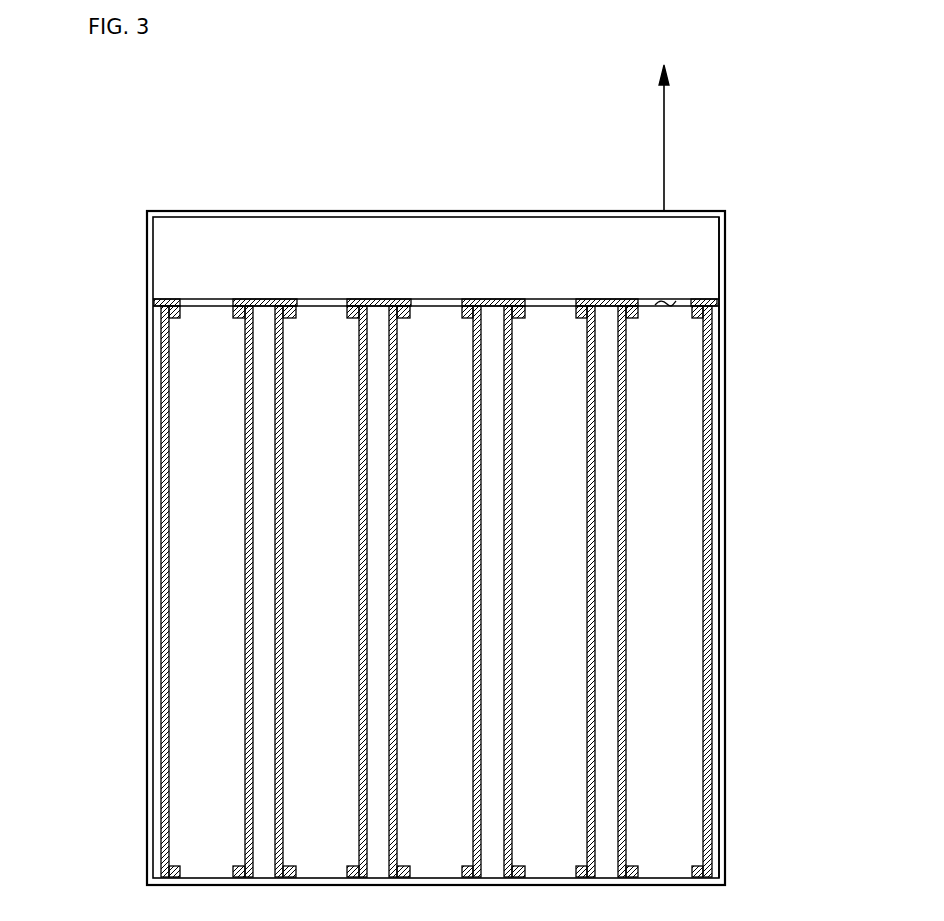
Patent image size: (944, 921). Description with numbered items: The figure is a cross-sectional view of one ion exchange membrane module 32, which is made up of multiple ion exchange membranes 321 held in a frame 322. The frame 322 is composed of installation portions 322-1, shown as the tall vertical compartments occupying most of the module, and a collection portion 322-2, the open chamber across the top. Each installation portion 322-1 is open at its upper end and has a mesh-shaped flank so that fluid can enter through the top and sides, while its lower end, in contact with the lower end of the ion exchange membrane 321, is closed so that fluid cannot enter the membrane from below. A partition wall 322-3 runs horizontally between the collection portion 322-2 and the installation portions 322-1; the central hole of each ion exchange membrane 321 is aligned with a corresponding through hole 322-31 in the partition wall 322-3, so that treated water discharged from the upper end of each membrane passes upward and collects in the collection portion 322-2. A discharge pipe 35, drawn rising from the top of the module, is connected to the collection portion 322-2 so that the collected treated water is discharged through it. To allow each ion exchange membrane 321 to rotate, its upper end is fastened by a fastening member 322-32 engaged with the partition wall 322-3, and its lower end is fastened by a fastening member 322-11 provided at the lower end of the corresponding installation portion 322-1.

The ion exchange membrane module 32 is at (118, 230).
The discharge pipe 35 is at (665, 125).
The ion exchange membrane 321 is at (160, 392).
The frame 322 is at (727, 463).
The installation portion 322-1 is at (725, 592).
The fastening member 322-11 is at (695, 866).
The collection portion 322-2 is at (727, 252).
The partition wall 322-3 is at (511, 220).
The through hole 322-31 is at (665, 302).
The fastening member 322-32 is at (530, 300).